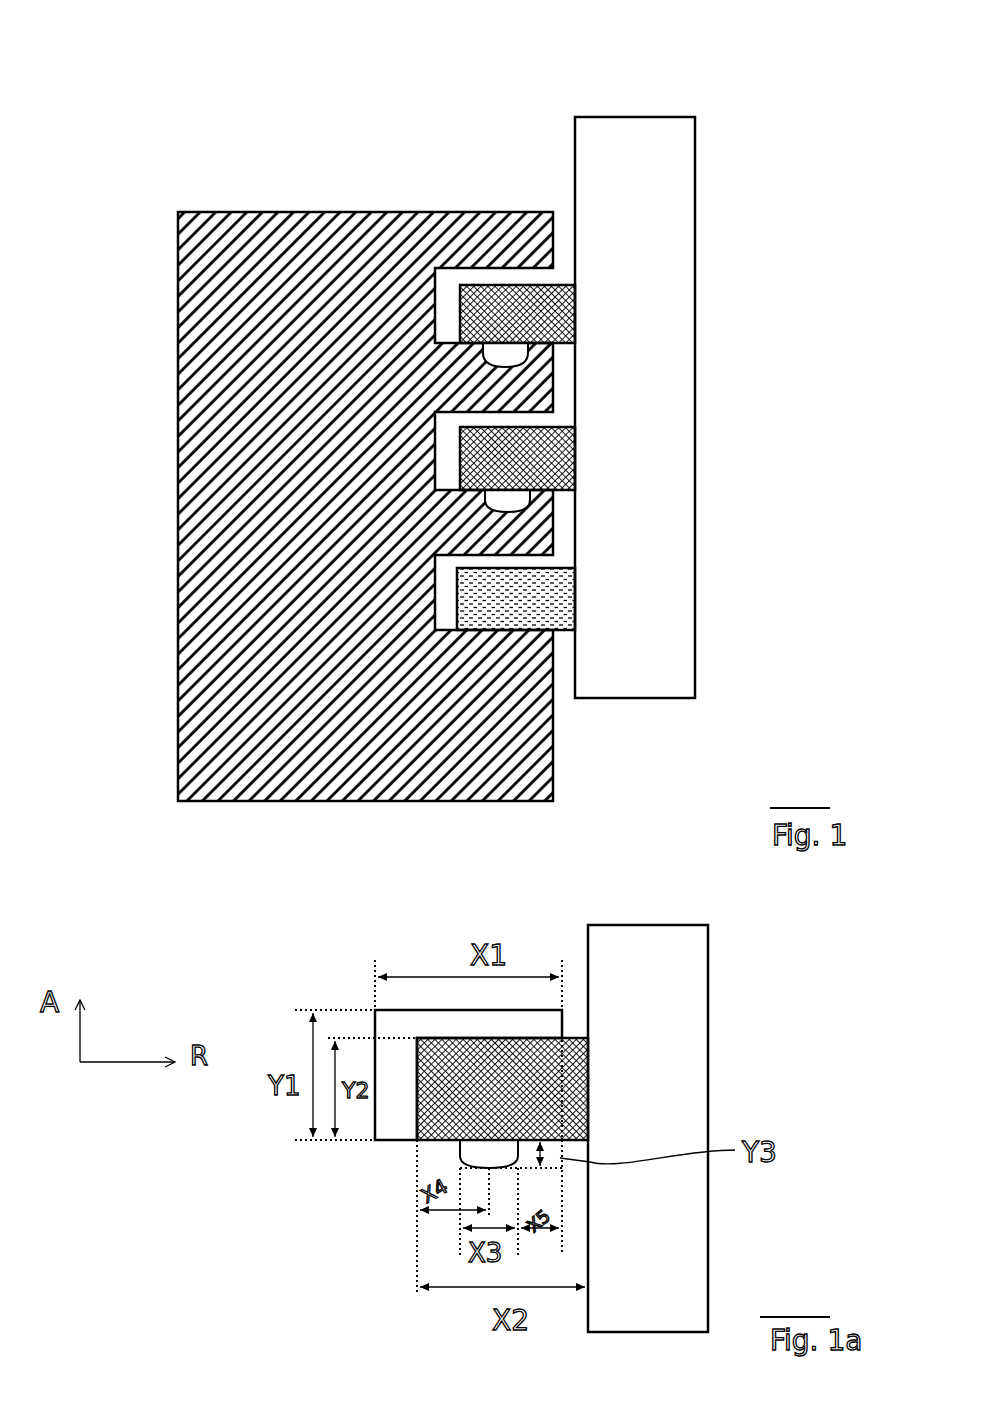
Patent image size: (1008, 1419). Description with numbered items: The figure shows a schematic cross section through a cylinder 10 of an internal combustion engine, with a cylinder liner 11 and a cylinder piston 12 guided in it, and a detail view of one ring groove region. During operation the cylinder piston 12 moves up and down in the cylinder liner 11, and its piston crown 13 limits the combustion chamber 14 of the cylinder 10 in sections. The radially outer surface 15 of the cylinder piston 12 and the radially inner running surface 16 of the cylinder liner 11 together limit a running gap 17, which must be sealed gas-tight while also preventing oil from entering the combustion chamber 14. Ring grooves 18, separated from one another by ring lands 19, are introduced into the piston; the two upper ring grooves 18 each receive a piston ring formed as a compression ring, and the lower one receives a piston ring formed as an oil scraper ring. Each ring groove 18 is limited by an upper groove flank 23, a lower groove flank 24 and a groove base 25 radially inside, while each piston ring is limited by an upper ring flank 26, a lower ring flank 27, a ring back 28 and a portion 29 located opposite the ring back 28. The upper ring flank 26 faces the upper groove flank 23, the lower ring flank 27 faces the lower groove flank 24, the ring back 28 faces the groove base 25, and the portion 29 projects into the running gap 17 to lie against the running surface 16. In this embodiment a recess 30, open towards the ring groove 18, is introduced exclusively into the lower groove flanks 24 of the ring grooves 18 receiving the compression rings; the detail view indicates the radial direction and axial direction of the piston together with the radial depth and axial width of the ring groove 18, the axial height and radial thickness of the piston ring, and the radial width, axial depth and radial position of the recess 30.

In FIG. 1, the cylinder 10 is at (755, 70).
In FIG. 1, the cylinder liner 11 is at (675, 235).
In FIG. 1a, the cylinder liner 11 is at (652, 1022).
In FIG. 1, the cylinder piston 12 is at (178, 440).
In FIG. 1, the piston crown 13 is at (285, 206).
In FIG. 1, the combustion chamber 14 is at (462, 184).
In FIG. 1, the radially outer surface 15 is at (560, 752).
In FIG. 1, the running surface 16 is at (575, 135).
In FIG. 1, the running gap 17 is at (560, 238).
In FIG. 1a, the running gap 17 is at (571, 1020).
In FIG. 1, the ring groove 18 is at (430, 592).
In FIG. 1a, the ring groove 18 is at (380, 1152).
In FIG. 1, the ring land 19 is at (540, 385).
In FIG. 1a, the upper groove flank 23 is at (422, 1010).
In FIG. 1a, the lower groove flank 24 is at (385, 1088).
In FIG. 1, the groove base 25 is at (437, 633).
In FIG. 1a, the groove base 25 is at (385, 1052).
In FIG. 1a, the upper ring flank 26 is at (540, 1036).
In FIG. 1a, the lower ring flank 27 is at (588, 1024).
In FIG. 1, the ring back 28 is at (462, 600).
In FIG. 1a, the ring back 28 is at (432, 1078).
In FIG. 1a, the portion located opposite the ring back 29 is at (576, 1102).
In FIG. 1, the recess 30 is at (503, 357).
In FIG. 1a, the recess 30 is at (458, 1150).